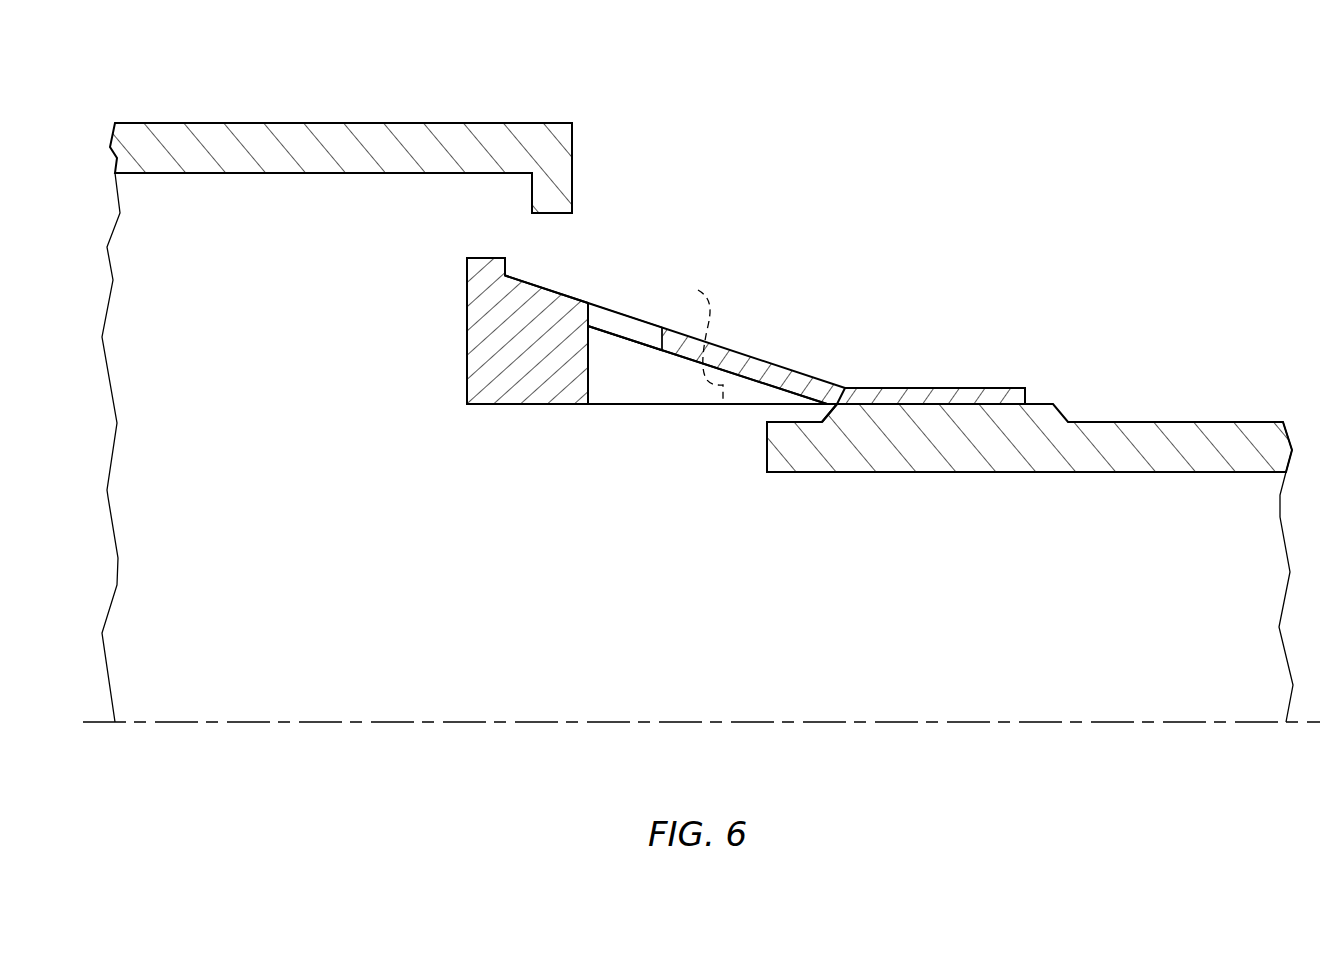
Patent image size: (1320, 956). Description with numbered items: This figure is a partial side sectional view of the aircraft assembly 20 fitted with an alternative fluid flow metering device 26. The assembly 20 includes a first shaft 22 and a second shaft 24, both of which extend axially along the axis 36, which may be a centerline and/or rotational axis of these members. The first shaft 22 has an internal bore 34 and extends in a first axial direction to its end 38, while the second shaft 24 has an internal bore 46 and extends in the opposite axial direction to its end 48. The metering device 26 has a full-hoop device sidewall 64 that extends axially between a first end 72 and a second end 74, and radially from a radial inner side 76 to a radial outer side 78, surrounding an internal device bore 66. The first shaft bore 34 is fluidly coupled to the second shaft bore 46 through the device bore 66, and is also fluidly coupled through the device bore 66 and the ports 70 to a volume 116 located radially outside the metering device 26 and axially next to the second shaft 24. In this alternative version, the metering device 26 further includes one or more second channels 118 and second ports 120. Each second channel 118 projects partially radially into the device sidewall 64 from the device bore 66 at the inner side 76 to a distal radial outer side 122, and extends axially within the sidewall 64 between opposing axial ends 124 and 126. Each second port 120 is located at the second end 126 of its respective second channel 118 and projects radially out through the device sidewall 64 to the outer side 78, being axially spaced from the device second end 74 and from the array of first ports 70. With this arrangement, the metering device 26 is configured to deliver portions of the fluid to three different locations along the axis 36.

The assembly 20 is at (931, 55).
The first shaft 22 is at (1001, 446).
The second shaft 24 is at (380, 128).
The fluid flow metering device 26 is at (856, 343).
The internal bore 34 is at (995, 593).
The axis 36 is at (180, 722).
The end 38 is at (765, 440).
The internal bore 46 is at (232, 456).
The end 48 is at (572, 167).
The sidewall 64 is at (477, 345).
The internal bore 66 is at (592, 561).
The port 70 is at (753, 340).
The first end 72 is at (1027, 393).
The second end 74 is at (467, 273).
The radial inner side 76 is at (527, 405).
The radial outer side 78 is at (540, 287).
The volume 116 is at (692, 186).
The second channel 118 is at (666, 428).
The second port 120 is at (612, 320).
The distal radial outer side 122 is at (678, 357).
The axial end 124 is at (814, 425).
The second end 126 is at (596, 385).